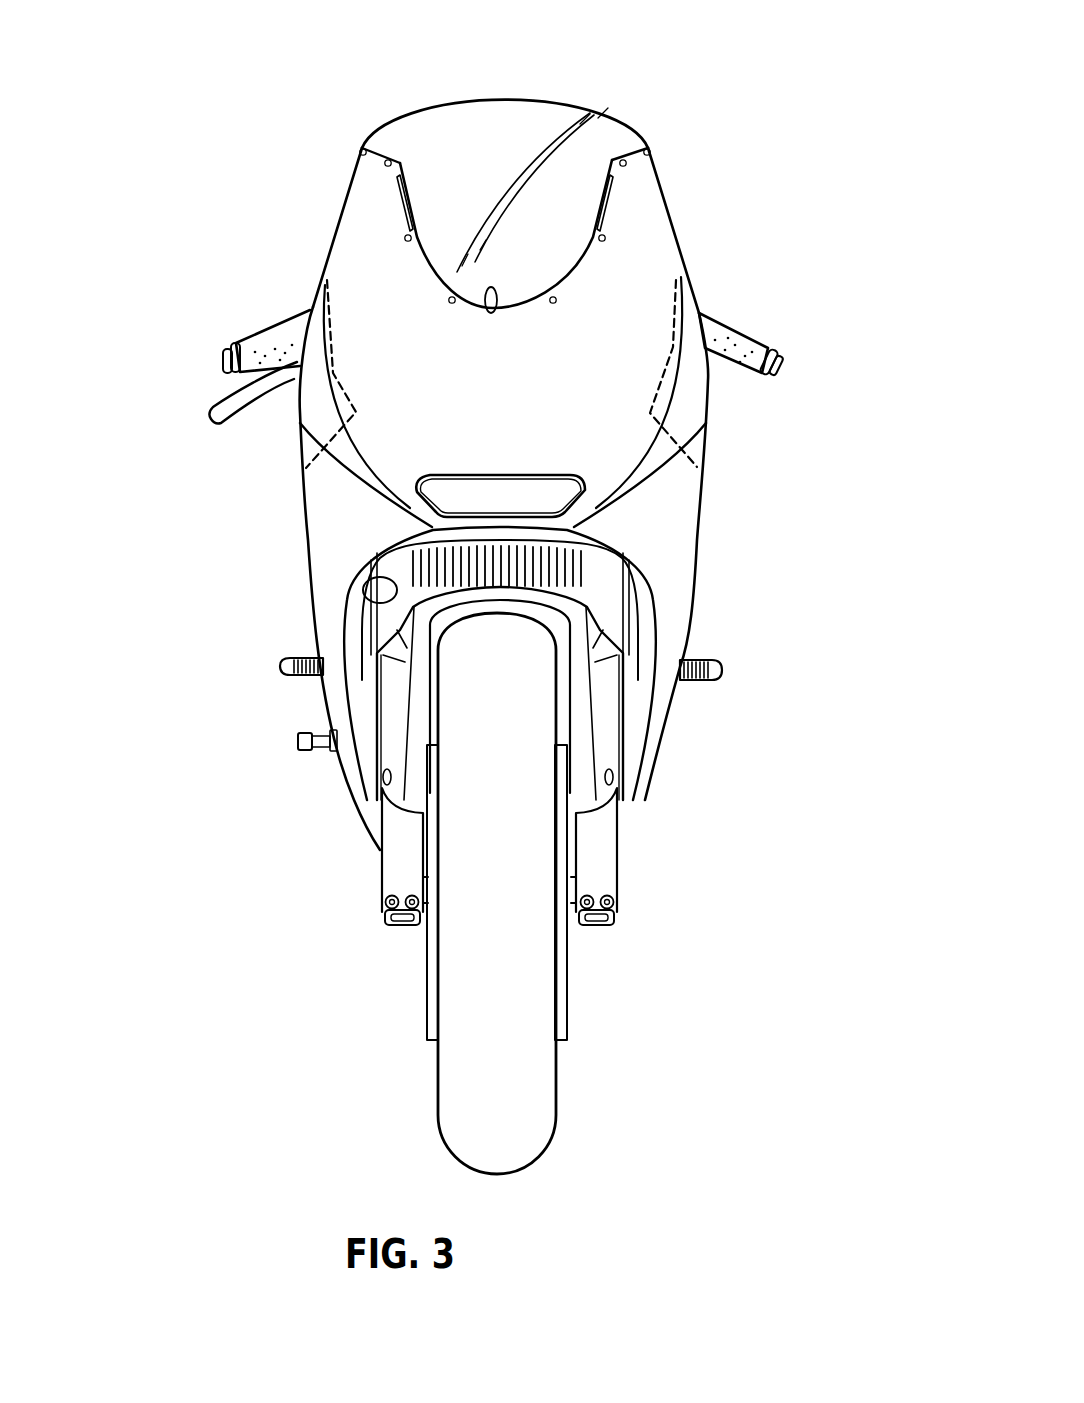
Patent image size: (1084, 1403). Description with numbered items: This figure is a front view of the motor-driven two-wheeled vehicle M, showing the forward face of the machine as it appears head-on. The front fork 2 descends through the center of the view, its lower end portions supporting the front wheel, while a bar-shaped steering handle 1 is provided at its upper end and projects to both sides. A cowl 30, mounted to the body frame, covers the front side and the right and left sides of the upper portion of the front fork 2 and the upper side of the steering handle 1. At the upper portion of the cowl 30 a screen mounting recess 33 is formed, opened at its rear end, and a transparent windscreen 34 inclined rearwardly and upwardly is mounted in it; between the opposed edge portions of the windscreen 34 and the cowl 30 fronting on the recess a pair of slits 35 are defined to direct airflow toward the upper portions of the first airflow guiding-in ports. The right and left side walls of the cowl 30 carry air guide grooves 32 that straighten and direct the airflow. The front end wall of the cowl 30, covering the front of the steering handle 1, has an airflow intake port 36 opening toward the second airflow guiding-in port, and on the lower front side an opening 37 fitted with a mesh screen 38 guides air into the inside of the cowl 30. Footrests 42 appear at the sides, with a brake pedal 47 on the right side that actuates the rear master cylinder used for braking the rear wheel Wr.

The motor-driven two-wheeled vehicle M is at (687, 130).
The cowl 30 is at (665, 261).
The windscreen 34 is at (553, 110).
The slits 35 is at (398, 200).
The screen mounting recess 33 is at (493, 313).
The air guide grooves 32 is at (347, 393).
The steering handle 1 is at (739, 343).
The airflow intake port 36 is at (488, 492).
The front fork 2 is at (602, 571).
The opening 37 is at (368, 580).
The mesh screen 38 is at (468, 558).
The footrests 42 is at (280, 662).
The brake pedal 47 is at (300, 745).
The rear wheel Wr is at (520, 1077).